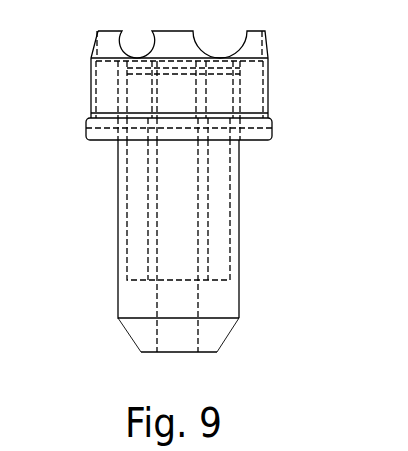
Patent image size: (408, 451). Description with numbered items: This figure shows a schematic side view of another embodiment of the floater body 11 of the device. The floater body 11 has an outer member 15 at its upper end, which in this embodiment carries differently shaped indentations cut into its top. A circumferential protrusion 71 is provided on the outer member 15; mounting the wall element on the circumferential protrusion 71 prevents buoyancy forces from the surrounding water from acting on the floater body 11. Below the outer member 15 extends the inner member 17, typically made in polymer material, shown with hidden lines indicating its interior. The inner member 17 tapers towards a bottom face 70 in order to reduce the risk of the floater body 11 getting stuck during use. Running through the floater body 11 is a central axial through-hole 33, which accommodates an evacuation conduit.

The outer member 15 is at (262, 88).
The circumferential protrusion 71 is at (260, 128).
The inner member 17 is at (121, 200).
The floater body 11 is at (261, 235).
The central axial through-hole 33 is at (176, 258).
The bottom face 70 is at (140, 352).